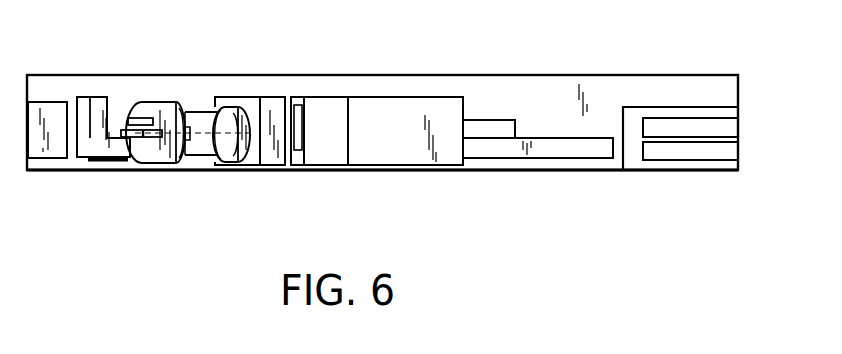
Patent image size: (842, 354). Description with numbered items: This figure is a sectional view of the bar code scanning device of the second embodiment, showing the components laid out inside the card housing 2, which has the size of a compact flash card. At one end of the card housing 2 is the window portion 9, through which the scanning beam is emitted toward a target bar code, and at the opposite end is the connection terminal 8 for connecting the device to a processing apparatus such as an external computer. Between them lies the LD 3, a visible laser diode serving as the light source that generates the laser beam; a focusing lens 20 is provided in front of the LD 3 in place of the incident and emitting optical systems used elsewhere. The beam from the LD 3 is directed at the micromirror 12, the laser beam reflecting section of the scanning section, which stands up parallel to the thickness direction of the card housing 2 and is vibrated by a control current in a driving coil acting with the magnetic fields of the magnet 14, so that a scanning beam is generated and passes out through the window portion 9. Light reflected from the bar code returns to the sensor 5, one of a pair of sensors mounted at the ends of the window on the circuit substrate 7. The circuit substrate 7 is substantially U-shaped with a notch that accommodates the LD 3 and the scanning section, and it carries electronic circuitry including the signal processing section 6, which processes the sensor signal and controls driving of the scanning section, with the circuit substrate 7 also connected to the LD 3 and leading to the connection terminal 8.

The card housing 2 is at (660, 82).
The LD 3 is at (198, 113).
The sensor 5 is at (100, 105).
The signal processing section 6 is at (482, 130).
The circuit substrate 7 is at (552, 147).
The connection terminal 8 is at (683, 150).
The window portion 9 is at (52, 150).
The micromirror 12 is at (292, 98).
The magnet 14 is at (248, 103).
The focusing lens 20 is at (221, 161).